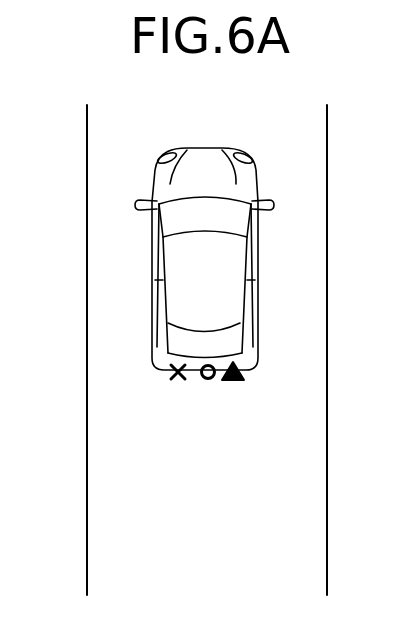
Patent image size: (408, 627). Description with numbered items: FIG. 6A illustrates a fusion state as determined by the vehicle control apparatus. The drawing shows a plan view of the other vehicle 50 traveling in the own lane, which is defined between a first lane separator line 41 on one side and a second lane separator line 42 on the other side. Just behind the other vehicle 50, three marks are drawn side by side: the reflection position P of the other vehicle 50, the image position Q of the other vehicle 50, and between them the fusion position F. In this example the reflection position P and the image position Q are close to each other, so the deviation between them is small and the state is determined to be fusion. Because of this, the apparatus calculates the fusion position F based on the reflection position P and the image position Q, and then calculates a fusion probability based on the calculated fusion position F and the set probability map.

The first lane separator line 41 is at (87, 158).
The second lane separator line 42 is at (328, 158).
The other vehicle 50 is at (257, 177).
The reflection position P is at (170, 379).
The fusion position F is at (199, 380).
The image position Q is at (236, 382).